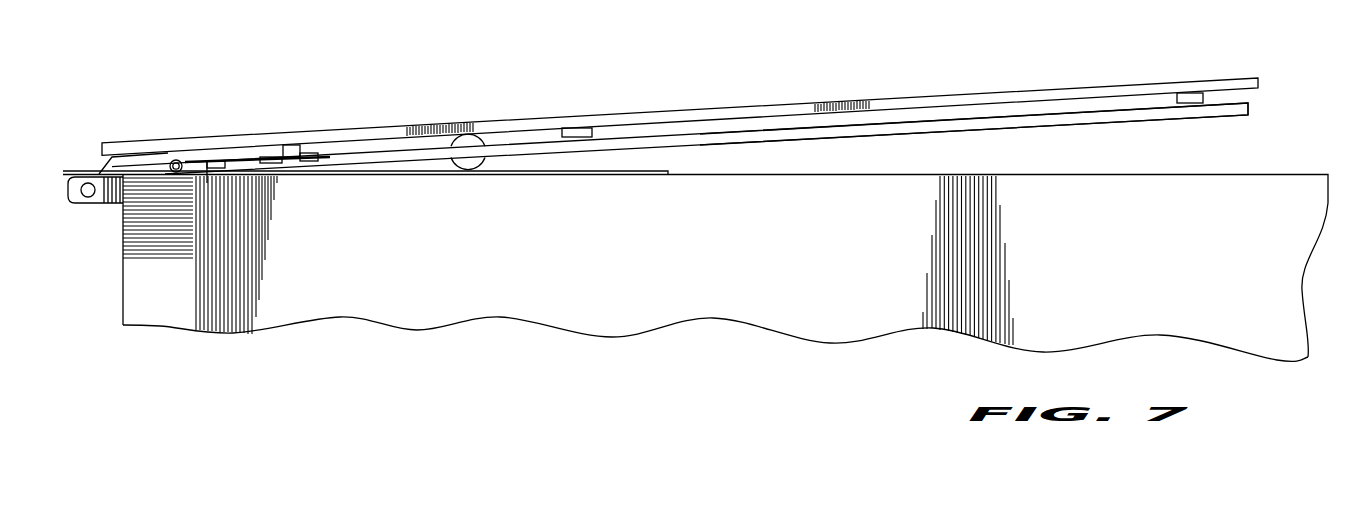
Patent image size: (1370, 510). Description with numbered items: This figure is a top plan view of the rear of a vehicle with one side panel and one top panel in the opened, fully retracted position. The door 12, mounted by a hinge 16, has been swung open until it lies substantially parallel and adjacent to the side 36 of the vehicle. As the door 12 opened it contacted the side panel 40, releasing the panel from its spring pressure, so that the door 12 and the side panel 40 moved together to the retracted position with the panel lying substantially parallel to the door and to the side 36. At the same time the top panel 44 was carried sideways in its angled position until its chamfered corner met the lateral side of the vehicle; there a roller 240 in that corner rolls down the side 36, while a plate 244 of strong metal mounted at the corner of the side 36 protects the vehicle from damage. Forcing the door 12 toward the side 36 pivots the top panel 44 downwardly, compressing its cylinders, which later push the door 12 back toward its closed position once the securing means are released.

The door 12 is at (679, 107).
The hinge 16 is at (78, 204).
The side of the vehicle 36 is at (1258, 174).
The side panel 40 is at (330, 133).
The top panel 44 is at (1073, 122).
The roller 240 is at (468, 168).
The plate 244 is at (637, 170).